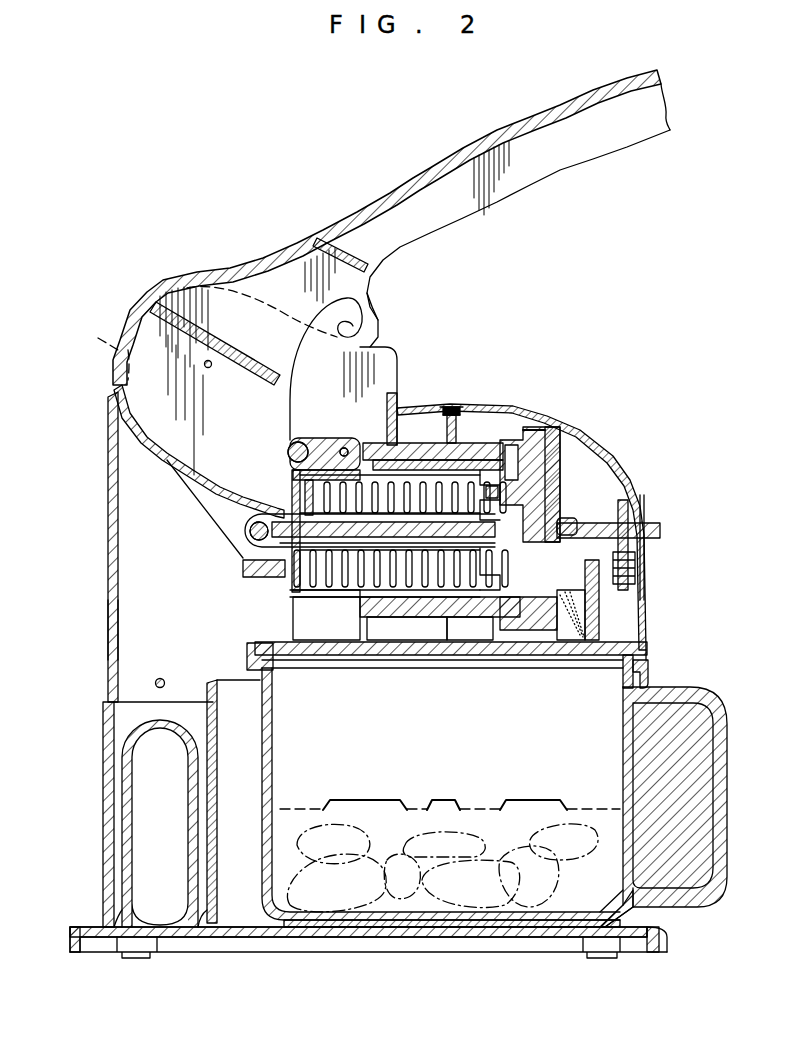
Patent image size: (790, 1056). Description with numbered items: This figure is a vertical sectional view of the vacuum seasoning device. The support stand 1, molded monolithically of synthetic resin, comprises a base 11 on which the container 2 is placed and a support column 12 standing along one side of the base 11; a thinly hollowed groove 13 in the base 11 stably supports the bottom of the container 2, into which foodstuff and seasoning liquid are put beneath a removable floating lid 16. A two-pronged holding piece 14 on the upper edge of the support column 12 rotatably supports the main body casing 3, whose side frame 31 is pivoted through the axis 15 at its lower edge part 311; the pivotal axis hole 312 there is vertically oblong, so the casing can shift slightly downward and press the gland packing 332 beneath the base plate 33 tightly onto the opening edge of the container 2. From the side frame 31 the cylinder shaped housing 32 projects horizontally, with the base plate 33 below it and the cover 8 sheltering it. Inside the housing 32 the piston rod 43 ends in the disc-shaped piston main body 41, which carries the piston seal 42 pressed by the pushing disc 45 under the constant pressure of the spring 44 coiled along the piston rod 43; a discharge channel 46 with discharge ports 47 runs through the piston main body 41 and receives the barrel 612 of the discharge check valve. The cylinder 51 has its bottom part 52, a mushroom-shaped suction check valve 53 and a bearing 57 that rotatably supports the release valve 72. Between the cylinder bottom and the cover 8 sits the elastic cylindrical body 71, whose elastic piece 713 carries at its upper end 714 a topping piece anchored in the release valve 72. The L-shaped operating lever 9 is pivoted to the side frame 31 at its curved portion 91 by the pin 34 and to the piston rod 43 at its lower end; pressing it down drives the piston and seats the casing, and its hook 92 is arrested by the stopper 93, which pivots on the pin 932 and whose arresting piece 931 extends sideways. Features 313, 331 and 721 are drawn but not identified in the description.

The support stand 1 is at (102, 796).
The base 11 is at (633, 937).
The support column 12 is at (120, 877).
The hollowed groove 13 is at (640, 917).
The two-pronged holding piece 14 is at (108, 702).
The axis 15 is at (166, 683).
The removable floating lid 16 is at (448, 808).
The container 2 is at (281, 892).
The main body casing 3 is at (104, 550).
The side frame 31 is at (130, 447).
The lower edge part 311 is at (130, 630).
The pivotal axis hole 312 is at (162, 678).
The lid liner 313 is at (197, 333).
The cylinder shaped housing 32 is at (525, 425).
The base plate 33 is at (345, 655).
The rim flange 331 is at (648, 676).
The gland packing 332 is at (633, 650).
The pin 34 is at (209, 361).
The piston main body 41 is at (540, 455).
The piston seal 42 is at (505, 486).
The piston rod 43 is at (356, 440).
The spring 44 is at (293, 603).
The pushing disc 45 is at (462, 443).
The discharge channel 46 is at (370, 598).
The discharge ports 47 is at (455, 617).
The cylinder 51 is at (420, 443).
The bottom part 52 is at (563, 462).
The suction check valve 53 is at (560, 592).
The bearing 57 is at (567, 520).
The barrel 612 is at (488, 592).
The cylindrical body 71 is at (599, 610).
The elastic piece 713 is at (635, 587).
The upper end 714 is at (645, 480).
The release valve 72 is at (618, 500).
The valve rod 721 is at (660, 532).
The cover 8 is at (577, 404).
The operating lever 9 is at (548, 178).
The curved portion 91 is at (163, 284).
The hook 92 is at (380, 313).
The stopper 93 is at (298, 440).
The arresting piece 931 is at (288, 452).
The pin 932 is at (318, 437).